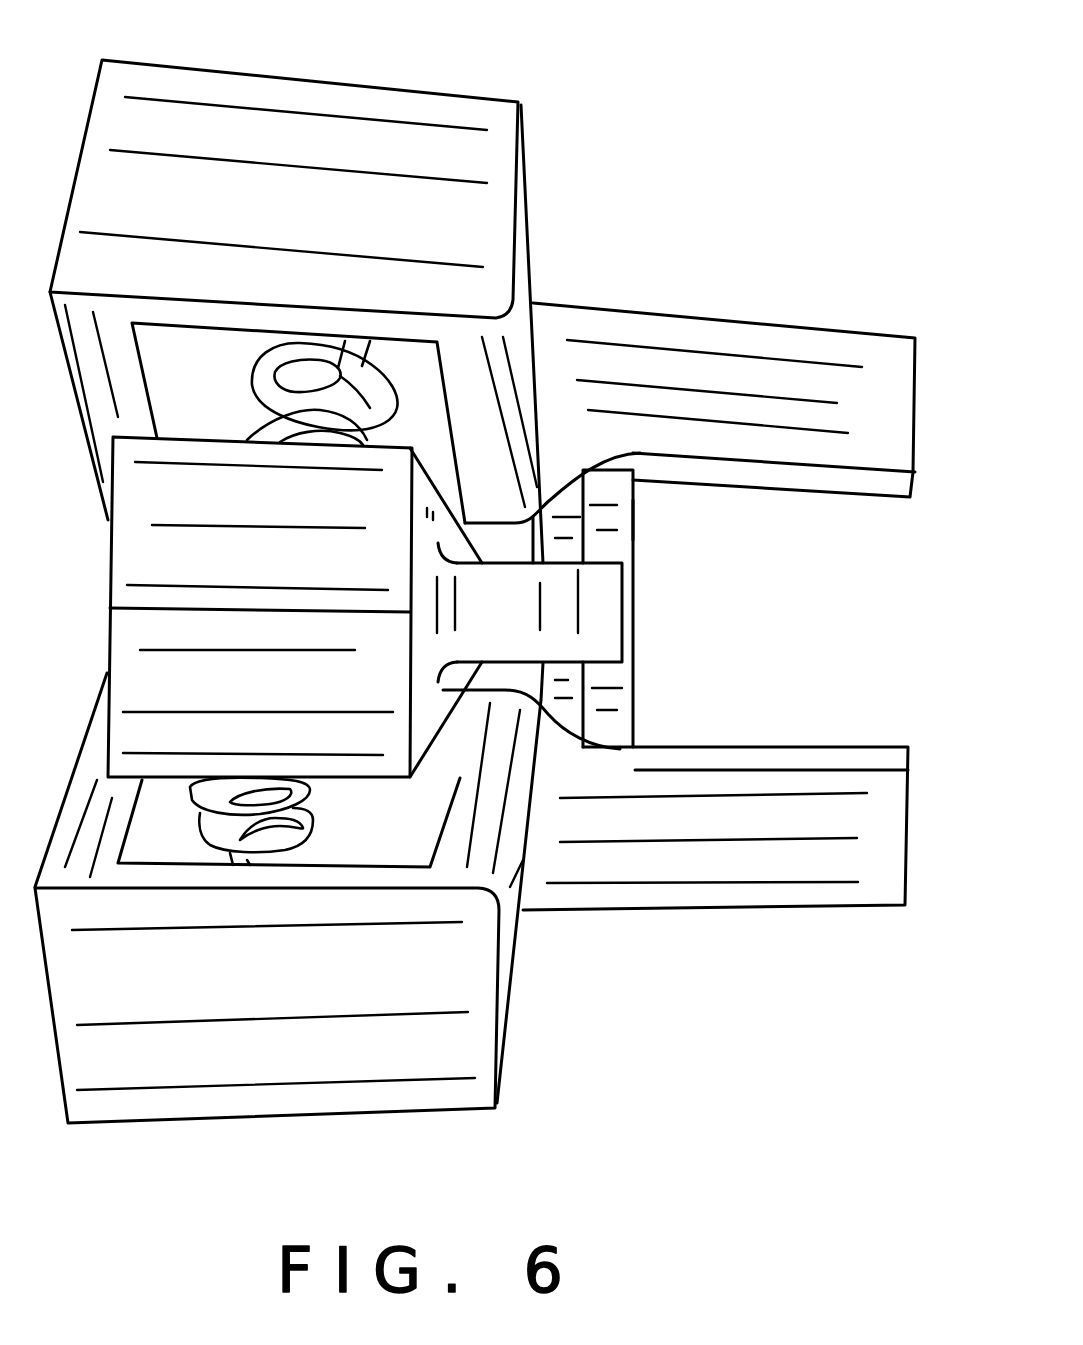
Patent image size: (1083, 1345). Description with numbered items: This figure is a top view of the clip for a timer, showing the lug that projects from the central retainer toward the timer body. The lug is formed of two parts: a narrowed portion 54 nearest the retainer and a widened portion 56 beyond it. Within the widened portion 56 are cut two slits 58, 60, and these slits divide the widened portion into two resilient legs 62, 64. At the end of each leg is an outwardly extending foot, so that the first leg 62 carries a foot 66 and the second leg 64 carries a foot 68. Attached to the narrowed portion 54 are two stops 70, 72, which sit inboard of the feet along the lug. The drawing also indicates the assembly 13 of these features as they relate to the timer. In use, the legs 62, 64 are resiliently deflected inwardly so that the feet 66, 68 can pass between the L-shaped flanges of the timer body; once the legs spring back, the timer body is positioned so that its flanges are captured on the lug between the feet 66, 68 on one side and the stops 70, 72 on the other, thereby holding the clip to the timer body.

The print cartridge assembly 13 is at (623, 85).
The narrowed portion 54 is at (534, 517).
The widened portion 56 is at (688, 479).
The slit 58 is at (596, 663).
The slit 60 is at (593, 563).
The resilient leg 62 is at (633, 712).
The resilient leg 64 is at (633, 524).
The foot 66 is at (605, 747).
The foot 68 is at (617, 472).
The stop 70 is at (574, 665).
The stop 72 is at (563, 523).